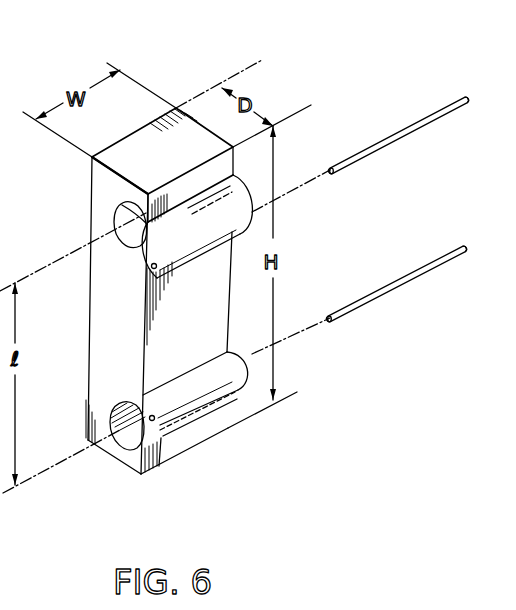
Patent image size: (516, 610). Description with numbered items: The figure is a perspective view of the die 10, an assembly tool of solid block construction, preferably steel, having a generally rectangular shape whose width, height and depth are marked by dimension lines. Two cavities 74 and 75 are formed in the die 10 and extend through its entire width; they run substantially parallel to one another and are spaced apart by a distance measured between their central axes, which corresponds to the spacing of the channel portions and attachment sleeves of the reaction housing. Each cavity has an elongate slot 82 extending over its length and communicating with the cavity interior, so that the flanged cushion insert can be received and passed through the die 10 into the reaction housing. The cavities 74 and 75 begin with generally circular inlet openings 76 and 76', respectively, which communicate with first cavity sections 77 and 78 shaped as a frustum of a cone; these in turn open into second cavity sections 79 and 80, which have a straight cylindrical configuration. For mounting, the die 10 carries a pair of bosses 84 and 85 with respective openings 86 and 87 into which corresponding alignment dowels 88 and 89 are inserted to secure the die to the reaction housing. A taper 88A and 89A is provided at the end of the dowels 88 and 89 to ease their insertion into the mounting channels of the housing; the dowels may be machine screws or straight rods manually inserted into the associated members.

The die 10 is at (176, 102).
The cavity 74 is at (108, 198).
The cavity 75 is at (113, 446).
The inlet opening 76 is at (99, 225).
The inlet opening 76' is at (122, 454).
The first cavity section 77 is at (146, 237).
The first cavity section 78 is at (149, 446).
The second cavity section 79 is at (248, 182).
The second cavity section 80 is at (252, 383).
The elongate slot 82 is at (252, 228).
The boss 84 is at (200, 242).
The boss 85 is at (195, 388).
The opening 86 is at (152, 270).
The opening 87 is at (149, 416).
The alignment dowel 88 is at (424, 126).
The taper 88A is at (462, 97).
The alignment dowel 89 is at (404, 281).
The taper 89A is at (462, 248).